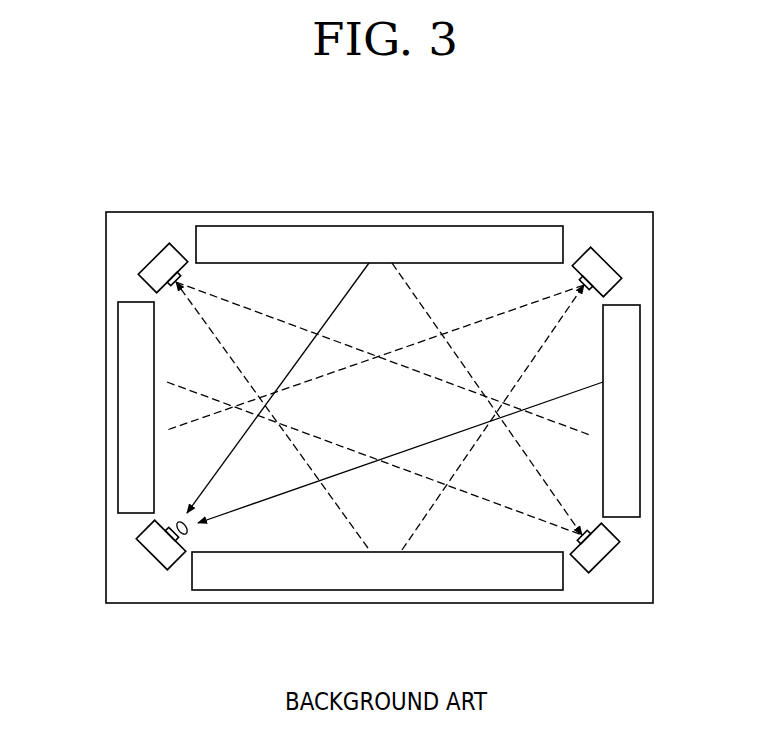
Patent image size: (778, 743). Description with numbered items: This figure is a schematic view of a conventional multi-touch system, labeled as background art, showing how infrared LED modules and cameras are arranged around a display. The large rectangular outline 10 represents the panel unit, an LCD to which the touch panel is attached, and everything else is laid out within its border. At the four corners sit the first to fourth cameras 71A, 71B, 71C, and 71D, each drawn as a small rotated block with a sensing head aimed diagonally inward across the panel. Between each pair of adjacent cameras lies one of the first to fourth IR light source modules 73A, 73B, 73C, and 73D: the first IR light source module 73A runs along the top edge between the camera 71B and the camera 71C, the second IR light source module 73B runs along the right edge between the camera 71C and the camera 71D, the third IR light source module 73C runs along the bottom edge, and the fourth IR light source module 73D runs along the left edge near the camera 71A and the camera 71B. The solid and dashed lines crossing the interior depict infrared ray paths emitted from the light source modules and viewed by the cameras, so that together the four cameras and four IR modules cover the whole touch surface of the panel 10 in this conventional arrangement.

The touch panel (display panel) 10 is at (653, 343).
The first camera 71A is at (158, 550).
The second camera 71B is at (160, 263).
The third camera 71C is at (599, 270).
The fourth camera 71D is at (597, 550).
The first IR light source module 73A is at (382, 235).
The second IR light source module 73B is at (628, 410).
The third IR light source module 73C is at (377, 578).
The fourth IR light source module 73D is at (125, 404).